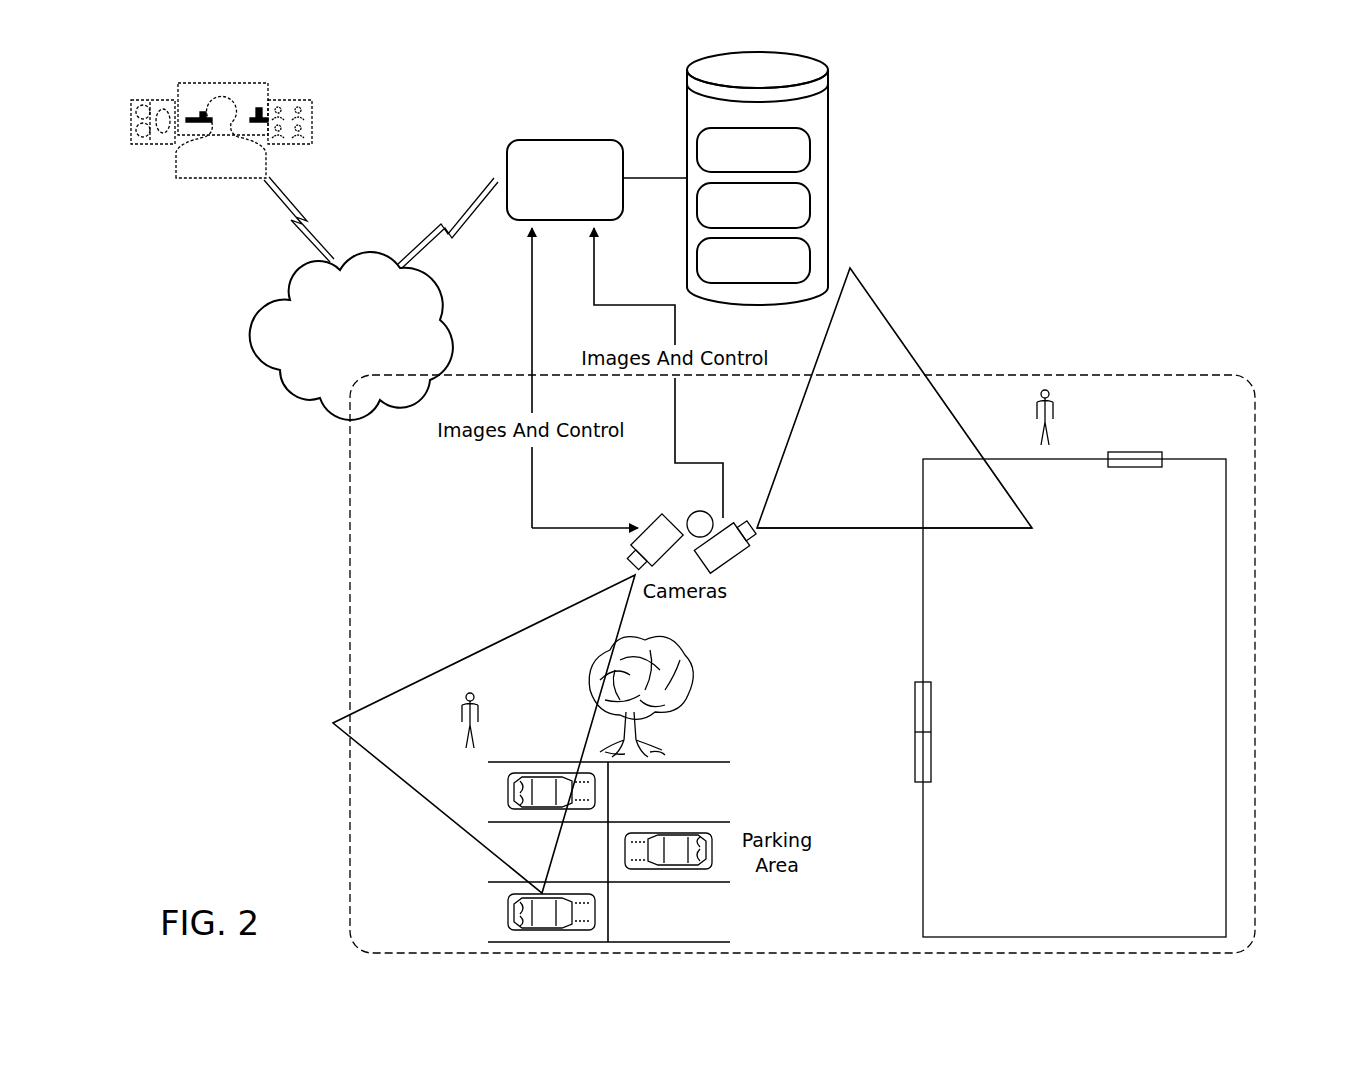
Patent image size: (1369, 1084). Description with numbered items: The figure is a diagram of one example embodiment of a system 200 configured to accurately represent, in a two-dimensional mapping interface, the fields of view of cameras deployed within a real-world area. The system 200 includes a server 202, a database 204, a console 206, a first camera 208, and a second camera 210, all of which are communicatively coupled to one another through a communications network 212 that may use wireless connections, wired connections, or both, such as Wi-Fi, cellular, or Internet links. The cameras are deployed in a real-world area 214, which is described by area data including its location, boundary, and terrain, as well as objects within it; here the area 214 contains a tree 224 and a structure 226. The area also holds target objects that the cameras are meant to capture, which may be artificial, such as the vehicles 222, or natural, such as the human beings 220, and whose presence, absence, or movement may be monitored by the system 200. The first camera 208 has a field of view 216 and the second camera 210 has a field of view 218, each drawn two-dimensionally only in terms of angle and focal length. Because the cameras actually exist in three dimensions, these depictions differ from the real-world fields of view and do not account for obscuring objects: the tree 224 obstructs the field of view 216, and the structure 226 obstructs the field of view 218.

The system 200 is at (1268, 106).
The server 202 is at (507, 162).
The database 204 is at (687, 110).
The console 206 is at (132, 130).
The first camera 208 is at (652, 518).
The second camera 210 is at (733, 562).
The communications network 212 is at (268, 332).
The area 214 is at (350, 585).
The field of view 216 is at (482, 635).
The field of view 218 is at (775, 450).
The human beings 220 is at (462, 718).
The vehicles 222 is at (507, 792).
The tree 224 is at (702, 707).
The structure 226 is at (923, 585).